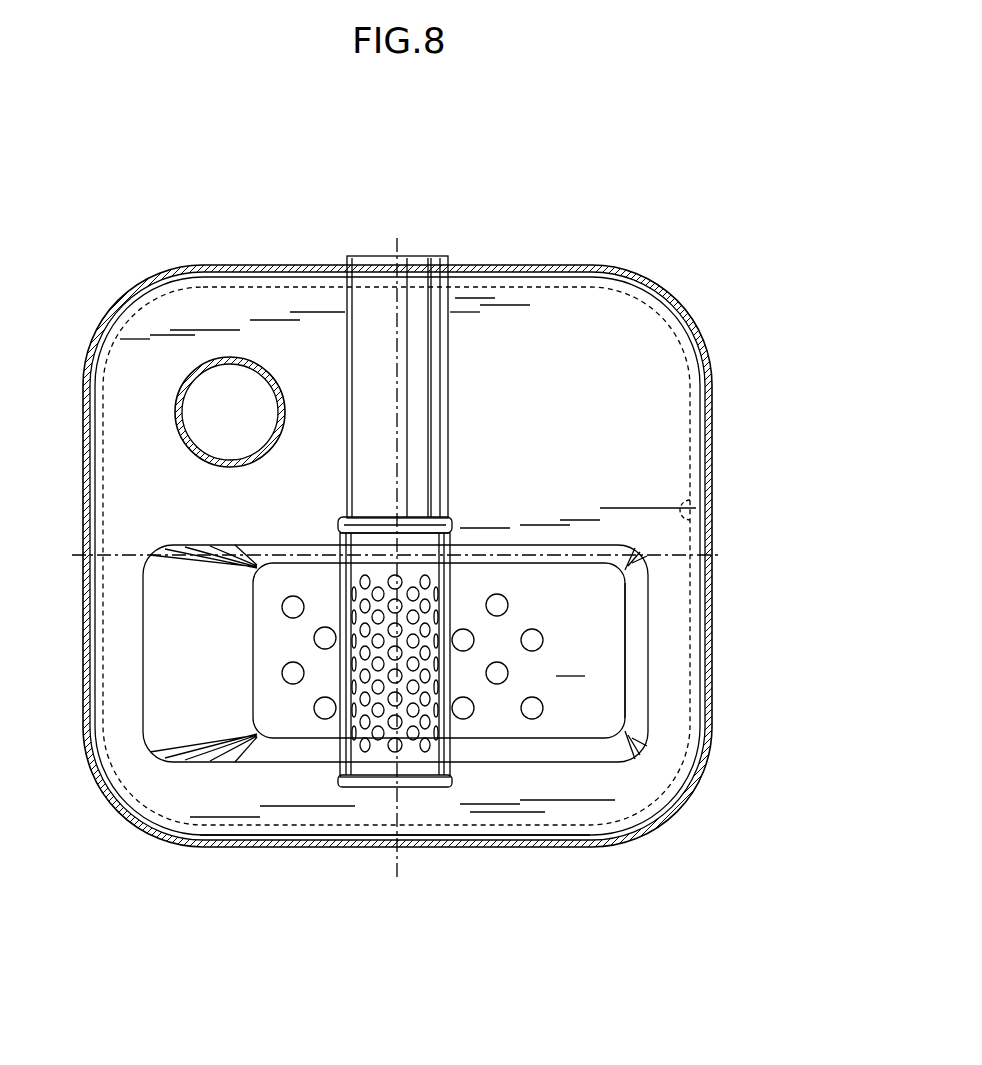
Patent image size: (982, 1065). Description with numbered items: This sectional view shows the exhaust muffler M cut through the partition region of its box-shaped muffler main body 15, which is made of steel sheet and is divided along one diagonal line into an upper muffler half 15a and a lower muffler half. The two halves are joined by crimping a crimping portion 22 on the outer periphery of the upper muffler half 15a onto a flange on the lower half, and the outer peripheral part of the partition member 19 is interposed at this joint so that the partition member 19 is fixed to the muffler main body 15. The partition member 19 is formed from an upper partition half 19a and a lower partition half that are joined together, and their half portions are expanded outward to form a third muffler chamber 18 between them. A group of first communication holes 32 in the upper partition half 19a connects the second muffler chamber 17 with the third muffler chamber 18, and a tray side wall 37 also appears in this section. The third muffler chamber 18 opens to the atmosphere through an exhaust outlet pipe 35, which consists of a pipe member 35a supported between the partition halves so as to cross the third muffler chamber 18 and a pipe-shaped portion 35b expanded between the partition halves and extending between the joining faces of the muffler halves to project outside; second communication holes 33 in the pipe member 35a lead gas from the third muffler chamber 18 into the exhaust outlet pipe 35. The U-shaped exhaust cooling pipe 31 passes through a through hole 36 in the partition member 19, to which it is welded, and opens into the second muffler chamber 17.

The muffler main body 15 is at (701, 355).
The upper muffler half 15a is at (712, 467).
The second muffler chamber 17 is at (694, 516).
The third muffler chamber 18 is at (395, 653).
The partition member 19 is at (642, 803).
The upper partition half 19a is at (582, 807).
The crimping portion 22 is at (657, 305).
The exhaust cooling pipe 31 is at (285, 388).
The first communication holes 32 is at (293, 673).
The second communication holes 33 is at (405, 618).
The exhaust outlet pipe 35 is at (449, 340).
The pipe member 35a is at (450, 556).
The pipe-shaped portion 35b is at (365, 440).
The through hole 36 is at (203, 443).
The tray side wall 37 is at (613, 680).
The exhaust muffler M is at (732, 634).